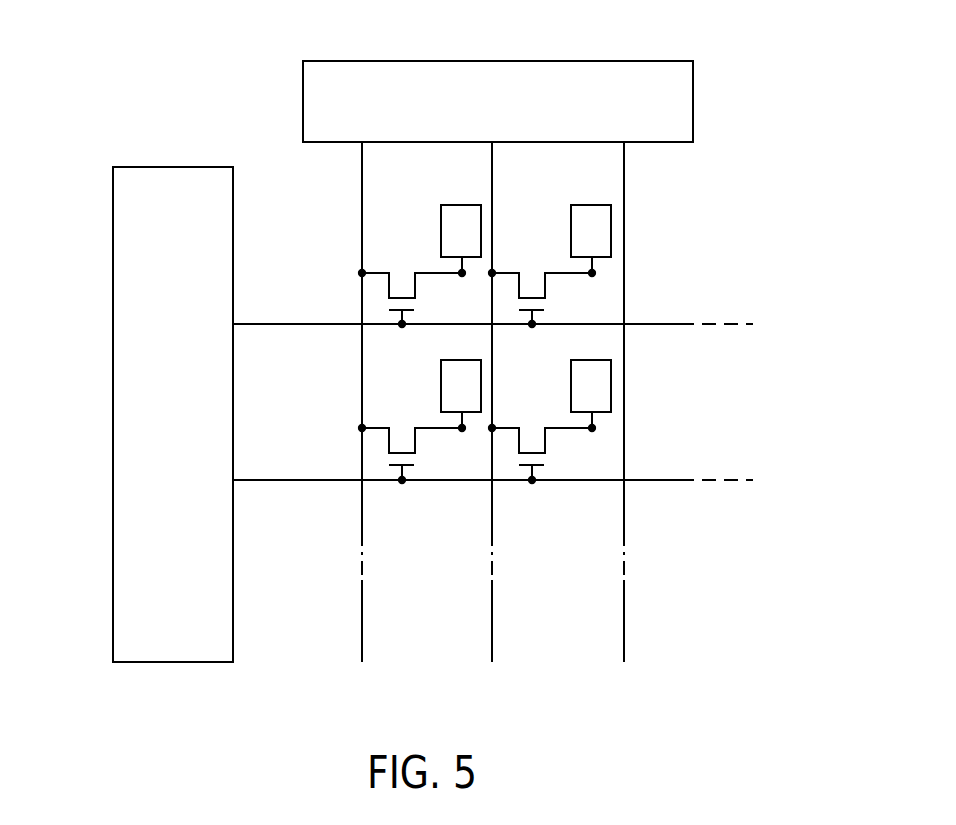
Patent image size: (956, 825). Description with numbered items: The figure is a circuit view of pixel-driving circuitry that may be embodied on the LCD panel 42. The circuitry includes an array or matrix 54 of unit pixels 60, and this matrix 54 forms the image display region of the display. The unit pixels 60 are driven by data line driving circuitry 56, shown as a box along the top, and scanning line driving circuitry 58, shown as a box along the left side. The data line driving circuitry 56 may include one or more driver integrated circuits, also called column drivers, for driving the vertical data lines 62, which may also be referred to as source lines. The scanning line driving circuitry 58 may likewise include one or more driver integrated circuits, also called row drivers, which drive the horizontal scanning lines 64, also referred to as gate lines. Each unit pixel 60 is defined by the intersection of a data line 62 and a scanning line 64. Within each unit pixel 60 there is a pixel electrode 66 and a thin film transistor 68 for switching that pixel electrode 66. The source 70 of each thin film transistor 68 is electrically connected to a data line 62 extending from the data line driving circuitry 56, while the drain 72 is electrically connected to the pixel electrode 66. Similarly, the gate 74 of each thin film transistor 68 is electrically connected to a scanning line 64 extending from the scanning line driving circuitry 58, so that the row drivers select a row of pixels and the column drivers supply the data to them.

The LCD panel 42 is at (447, 333).
The matrix 54 is at (507, 392).
The data line driving circuitry 56 is at (303, 102).
The scanning line driving circuitry 58 is at (172, 167).
The unit pixel 60 is at (342, 274).
The data line 62 is at (492, 623).
The scanning line 64 is at (295, 325).
The pixel electrode 66 is at (462, 205).
The thin film transistor 68 is at (420, 311).
The source 70 is at (362, 273).
The drain 72 is at (462, 272).
The gate 74 is at (402, 326).